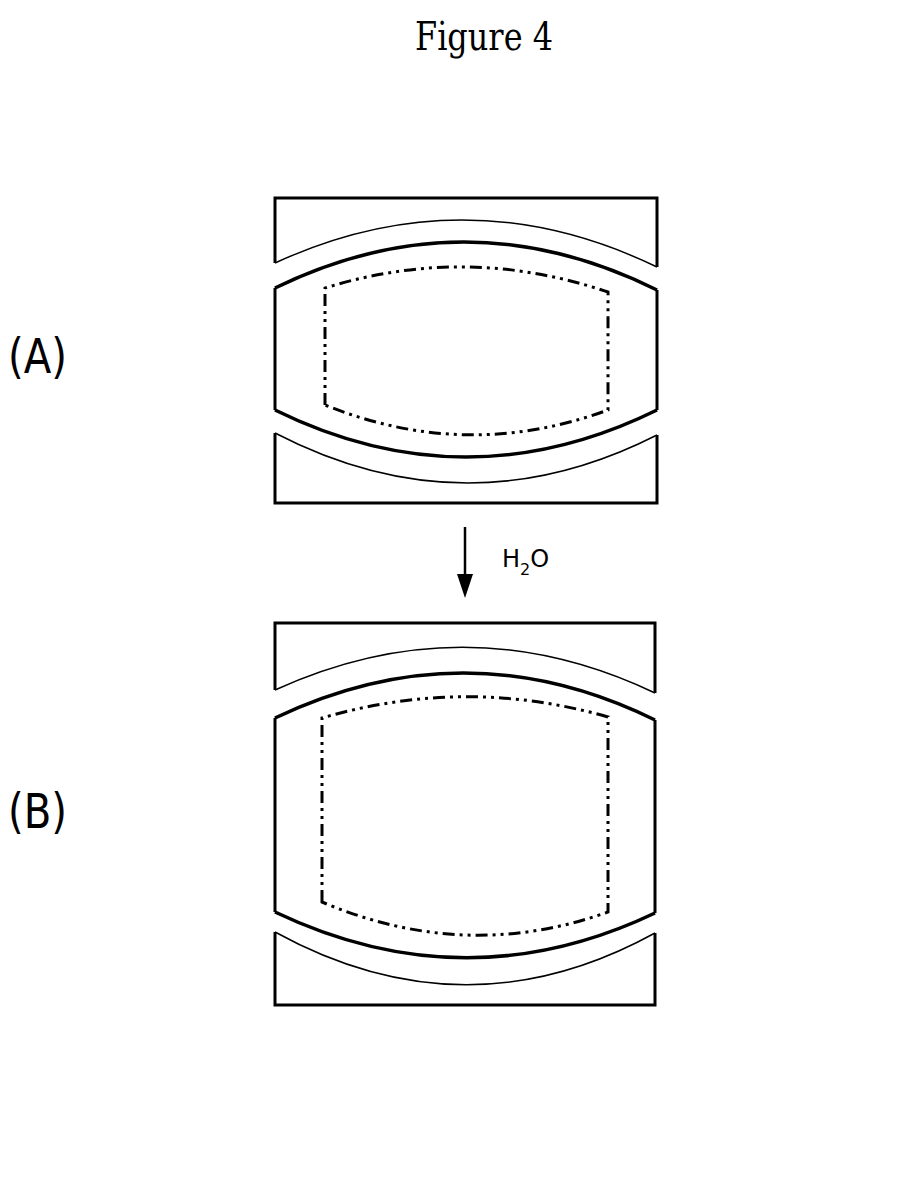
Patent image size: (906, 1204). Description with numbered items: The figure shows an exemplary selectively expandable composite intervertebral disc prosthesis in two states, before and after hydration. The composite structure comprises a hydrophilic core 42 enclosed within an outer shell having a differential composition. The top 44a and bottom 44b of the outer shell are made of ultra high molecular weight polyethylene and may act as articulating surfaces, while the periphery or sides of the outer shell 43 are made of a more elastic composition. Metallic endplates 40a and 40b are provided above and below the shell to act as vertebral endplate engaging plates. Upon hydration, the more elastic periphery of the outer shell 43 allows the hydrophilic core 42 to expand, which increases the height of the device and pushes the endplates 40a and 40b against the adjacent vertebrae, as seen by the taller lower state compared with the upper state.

The metallic endplate 40a is at (291, 193).
The metallic endplate 40b is at (286, 502).
The hydrophilic core 42 is at (322, 337).
The outer shell periphery 43 is at (656, 362).
The top of the outer shell 44a is at (577, 246).
The bottom of the outer shell 44b is at (571, 458).